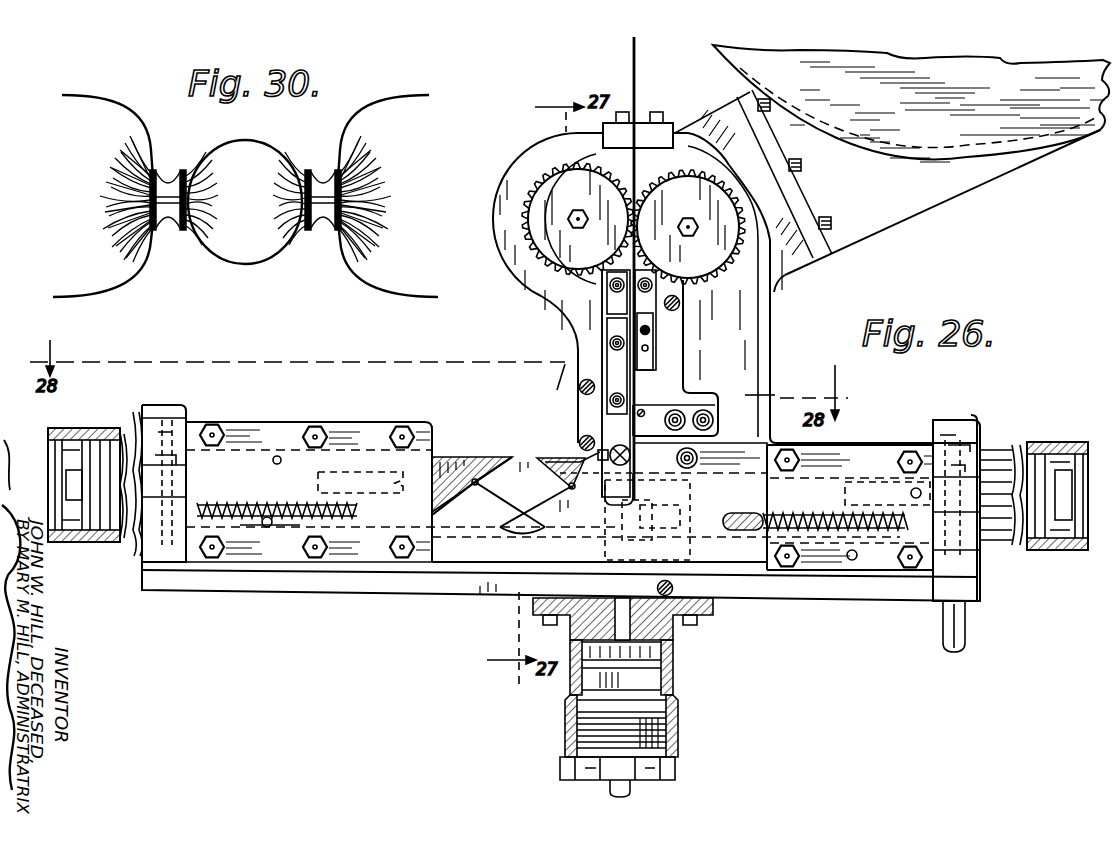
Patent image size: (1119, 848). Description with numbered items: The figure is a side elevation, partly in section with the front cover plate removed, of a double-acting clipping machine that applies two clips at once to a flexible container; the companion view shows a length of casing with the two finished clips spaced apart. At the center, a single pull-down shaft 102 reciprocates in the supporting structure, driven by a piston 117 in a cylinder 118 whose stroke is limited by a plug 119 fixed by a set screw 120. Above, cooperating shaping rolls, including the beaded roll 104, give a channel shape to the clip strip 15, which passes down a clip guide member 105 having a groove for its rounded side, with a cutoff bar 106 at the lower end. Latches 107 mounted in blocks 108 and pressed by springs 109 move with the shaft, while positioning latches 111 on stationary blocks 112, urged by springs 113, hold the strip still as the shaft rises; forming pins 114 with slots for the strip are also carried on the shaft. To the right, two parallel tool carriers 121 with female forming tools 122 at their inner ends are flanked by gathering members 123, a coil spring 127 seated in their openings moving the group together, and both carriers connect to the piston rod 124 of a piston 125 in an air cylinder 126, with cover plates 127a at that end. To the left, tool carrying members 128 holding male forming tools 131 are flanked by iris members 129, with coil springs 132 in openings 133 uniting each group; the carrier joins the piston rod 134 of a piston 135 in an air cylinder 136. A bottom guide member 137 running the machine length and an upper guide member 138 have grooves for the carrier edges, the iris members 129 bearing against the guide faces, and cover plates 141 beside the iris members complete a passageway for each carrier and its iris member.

The strip 15 is at (641, 103).
The pull-down shaft 102 is at (638, 626).
The roll 104 is at (722, 262).
The clip guide member 105 is at (620, 361).
The cutoff bar 106 is at (616, 428).
The latch 107 is at (652, 372).
The block 108 is at (650, 323).
The spring 109 is at (652, 342).
The positioning latch 111 is at (690, 395).
The stationary block 112 is at (720, 412).
The spring 113 is at (742, 393).
The forming pin 114 is at (612, 455).
The piston 117 is at (660, 657).
The cylinder 118 is at (676, 720).
The plug 119 is at (590, 737).
The set screw 120 is at (566, 762).
The tool carrier 121 is at (889, 456).
The female forming tool 122 is at (683, 494).
The gathering member 123 is at (558, 520).
The piston rod 124 is at (1014, 452).
The piston 125 is at (1030, 551).
The air cylinder 126 is at (1045, 442).
The coil spring 127 is at (838, 560).
The cover plate 127a is at (852, 455).
The tool carrying member 128 is at (290, 450).
The iris member 129 is at (462, 520).
The male forming tool 131 is at (356, 522).
The coil spring 132 is at (297, 405).
The opening 133 is at (268, 528).
The piston rod 134 is at (148, 428).
The piston 135 is at (98, 428).
The air cylinder 136 is at (95, 545).
The bottom guide member 137 is at (240, 545).
The upper guide member 138 is at (236, 422).
The cover plate 141 is at (436, 455).